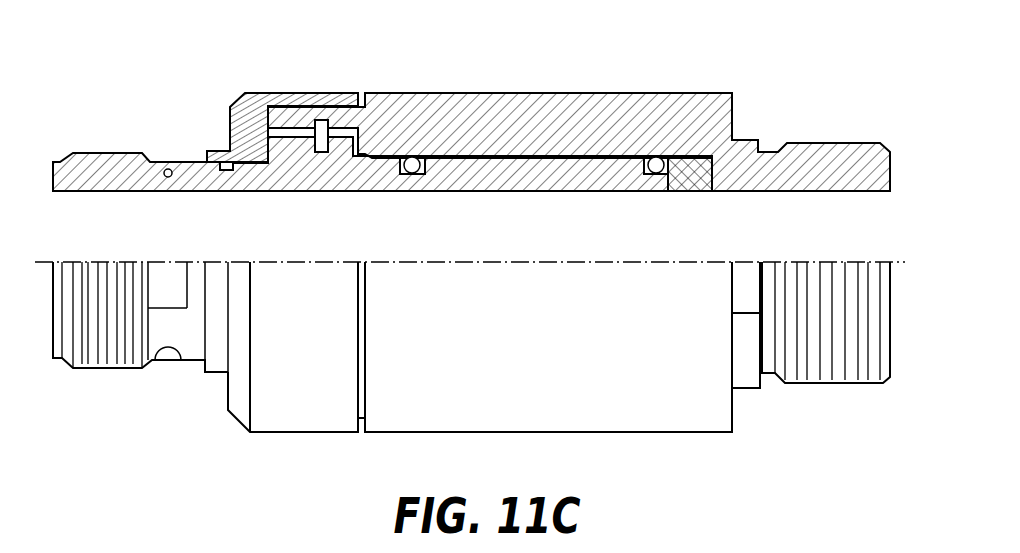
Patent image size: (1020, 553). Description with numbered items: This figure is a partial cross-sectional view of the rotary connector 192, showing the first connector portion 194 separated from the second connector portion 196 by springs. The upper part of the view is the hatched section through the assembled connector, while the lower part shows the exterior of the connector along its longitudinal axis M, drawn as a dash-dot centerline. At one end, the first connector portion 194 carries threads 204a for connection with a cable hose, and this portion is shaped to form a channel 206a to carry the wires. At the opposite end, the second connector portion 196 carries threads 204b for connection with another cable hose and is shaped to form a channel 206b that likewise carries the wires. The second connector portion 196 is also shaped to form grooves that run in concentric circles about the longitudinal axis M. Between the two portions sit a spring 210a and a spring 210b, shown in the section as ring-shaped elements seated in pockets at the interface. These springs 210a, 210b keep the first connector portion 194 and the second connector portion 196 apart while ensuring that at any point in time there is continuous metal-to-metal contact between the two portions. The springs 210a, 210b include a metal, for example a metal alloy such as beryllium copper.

The valve assembly 192 is at (471, 129).
The first connector portion 194 is at (403, 92).
The second connector portion 196 is at (295, 92).
The spring 210a is at (411, 172).
The spring 210b is at (657, 172).
The channel 206a is at (777, 242).
The channel 206b is at (268, 238).
The threads 204a is at (842, 385).
The threads 204b is at (100, 370).
The longitudinal axis M is at (520, 263).